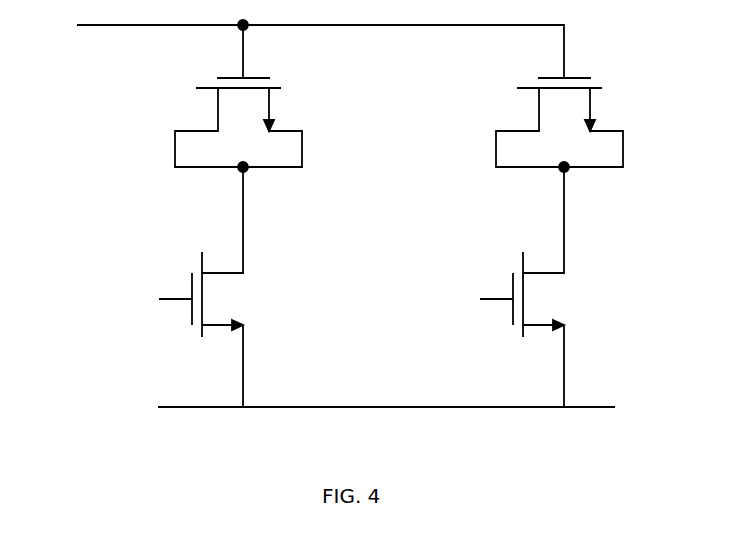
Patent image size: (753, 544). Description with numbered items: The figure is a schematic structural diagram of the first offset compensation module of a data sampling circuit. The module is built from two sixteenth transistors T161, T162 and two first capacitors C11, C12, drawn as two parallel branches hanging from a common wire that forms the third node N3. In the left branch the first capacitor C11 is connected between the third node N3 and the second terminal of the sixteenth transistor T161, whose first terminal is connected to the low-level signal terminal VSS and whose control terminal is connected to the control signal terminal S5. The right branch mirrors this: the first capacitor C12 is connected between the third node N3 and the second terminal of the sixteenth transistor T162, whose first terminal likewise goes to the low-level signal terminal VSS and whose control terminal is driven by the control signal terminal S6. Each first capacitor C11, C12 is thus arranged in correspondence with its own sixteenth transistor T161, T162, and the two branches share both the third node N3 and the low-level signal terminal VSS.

The third node N3 is at (304, 46).
The first capacitor C11 is at (202, 98).
The first capacitor C12 is at (592, 125).
The sixteenth transistor T161 is at (244, 287).
The sixteenth transistor T162 is at (567, 287).
The control signal terminal S5 is at (157, 300).
The control signal terminal S6 is at (478, 300).
The low-level signal terminal VSS is at (364, 405).